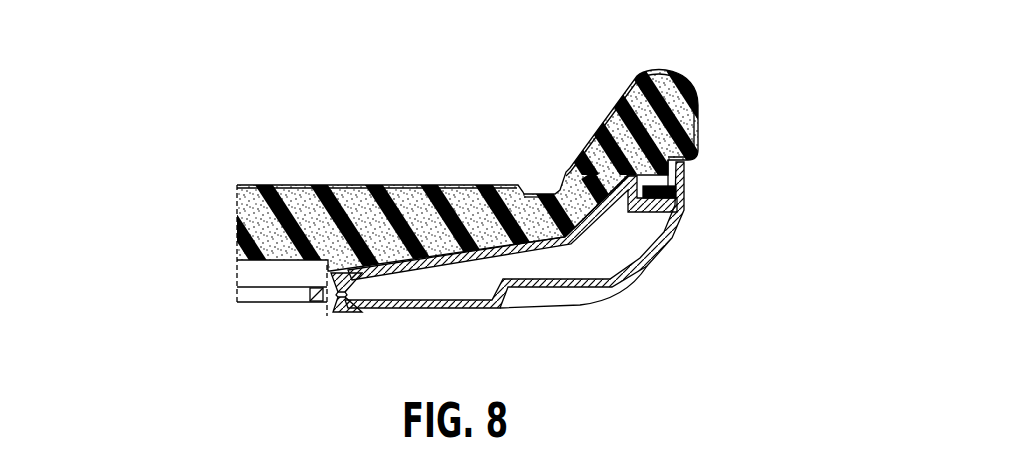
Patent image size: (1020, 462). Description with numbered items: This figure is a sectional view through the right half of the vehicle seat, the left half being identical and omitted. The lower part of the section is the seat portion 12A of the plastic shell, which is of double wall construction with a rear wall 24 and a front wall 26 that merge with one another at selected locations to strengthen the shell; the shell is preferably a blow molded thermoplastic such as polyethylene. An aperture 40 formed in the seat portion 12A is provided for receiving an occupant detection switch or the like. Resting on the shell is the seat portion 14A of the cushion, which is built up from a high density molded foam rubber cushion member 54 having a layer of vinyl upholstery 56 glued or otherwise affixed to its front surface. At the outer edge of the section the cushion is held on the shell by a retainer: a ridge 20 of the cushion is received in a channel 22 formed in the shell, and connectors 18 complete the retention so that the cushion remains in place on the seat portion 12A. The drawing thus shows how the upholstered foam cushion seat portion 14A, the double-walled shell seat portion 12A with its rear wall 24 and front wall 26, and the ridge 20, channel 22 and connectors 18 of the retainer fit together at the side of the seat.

The seat portion of the cushion 14A is at (386, 177).
The front wall 26 is at (490, 187).
The ridge 20 is at (697, 127).
The layer of vinyl upholstery 56 is at (273, 187).
The cushion member 54 is at (233, 218).
The aperture 40 is at (237, 297).
The seat portion of the shell 12A is at (330, 320).
The channel 22 is at (688, 222).
The connectors 18 is at (685, 198).
The rear wall 24 is at (637, 278).